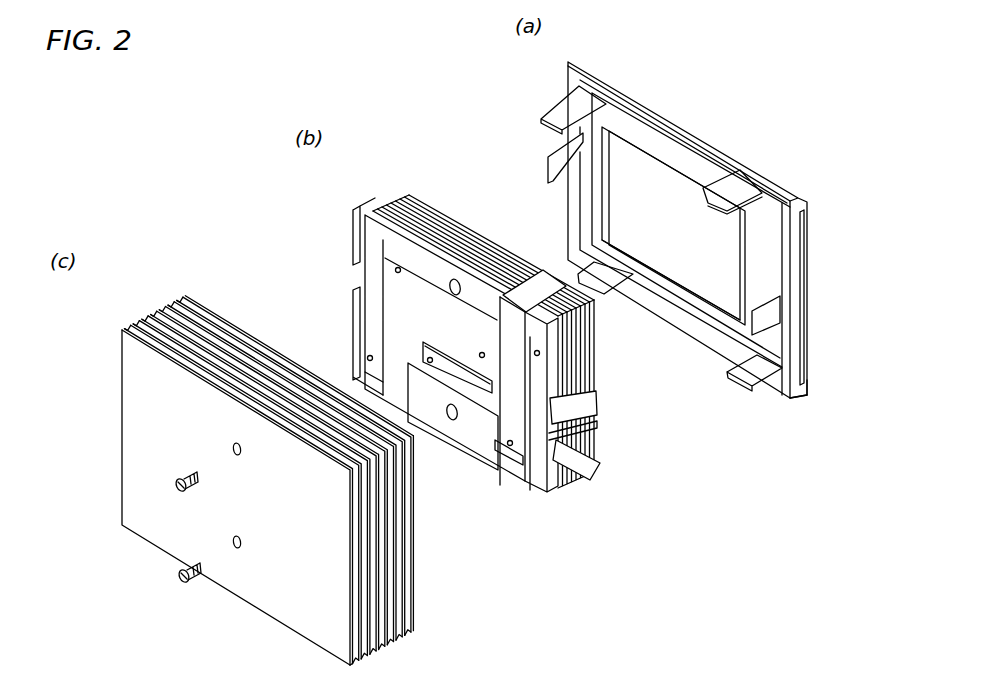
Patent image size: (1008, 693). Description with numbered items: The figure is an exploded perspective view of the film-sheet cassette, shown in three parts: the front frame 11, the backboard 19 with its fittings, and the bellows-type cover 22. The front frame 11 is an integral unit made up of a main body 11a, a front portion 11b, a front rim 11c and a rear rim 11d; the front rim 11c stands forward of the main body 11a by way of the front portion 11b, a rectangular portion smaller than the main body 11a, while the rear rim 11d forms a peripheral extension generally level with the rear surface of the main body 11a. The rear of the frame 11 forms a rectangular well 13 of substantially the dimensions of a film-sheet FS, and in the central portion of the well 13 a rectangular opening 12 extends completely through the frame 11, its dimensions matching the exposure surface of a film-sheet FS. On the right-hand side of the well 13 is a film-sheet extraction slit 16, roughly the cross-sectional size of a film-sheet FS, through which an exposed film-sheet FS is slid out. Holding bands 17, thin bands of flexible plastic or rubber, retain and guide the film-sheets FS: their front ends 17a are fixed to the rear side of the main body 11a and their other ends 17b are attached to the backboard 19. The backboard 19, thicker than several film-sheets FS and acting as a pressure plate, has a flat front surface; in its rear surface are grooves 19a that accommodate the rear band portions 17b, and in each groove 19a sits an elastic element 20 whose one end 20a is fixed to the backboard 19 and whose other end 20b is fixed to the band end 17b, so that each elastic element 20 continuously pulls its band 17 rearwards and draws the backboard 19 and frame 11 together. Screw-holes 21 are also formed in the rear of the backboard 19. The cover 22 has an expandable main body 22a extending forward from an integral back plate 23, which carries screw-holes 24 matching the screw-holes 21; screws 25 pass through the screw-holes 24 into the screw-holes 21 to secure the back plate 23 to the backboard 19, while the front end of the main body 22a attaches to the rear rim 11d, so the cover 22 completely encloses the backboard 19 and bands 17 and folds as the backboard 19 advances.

The front frame 11 is at (670, 117).
The main body 11a is at (792, 398).
The front portion 11b is at (764, 275).
The front rim 11c is at (722, 328).
The rear rim 11d is at (798, 395).
The rectangular opening 12 is at (708, 275).
The rectangular well 13 is at (770, 222).
The film-sheet extraction slit 16 is at (799, 256).
The holding band 17 is at (733, 197).
The front end of holding band 17a is at (580, 100).
The rear end of holding band 17b is at (596, 466).
The backboard 19 is at (405, 233).
The groove 19a is at (500, 360).
The elastic element 20 is at (512, 407).
The end of elastic element 20a is at (433, 362).
The other end of elastic element 20b is at (566, 431).
The screw-hole 21 is at (459, 283).
The bellows-type cover 22 is at (154, 312).
The main body of cover 22a is at (397, 598).
The back plate 23 is at (137, 425).
The screw-hole 24 is at (232, 451).
The screw 25 is at (184, 578).
The film-sheet FS is at (445, 236).